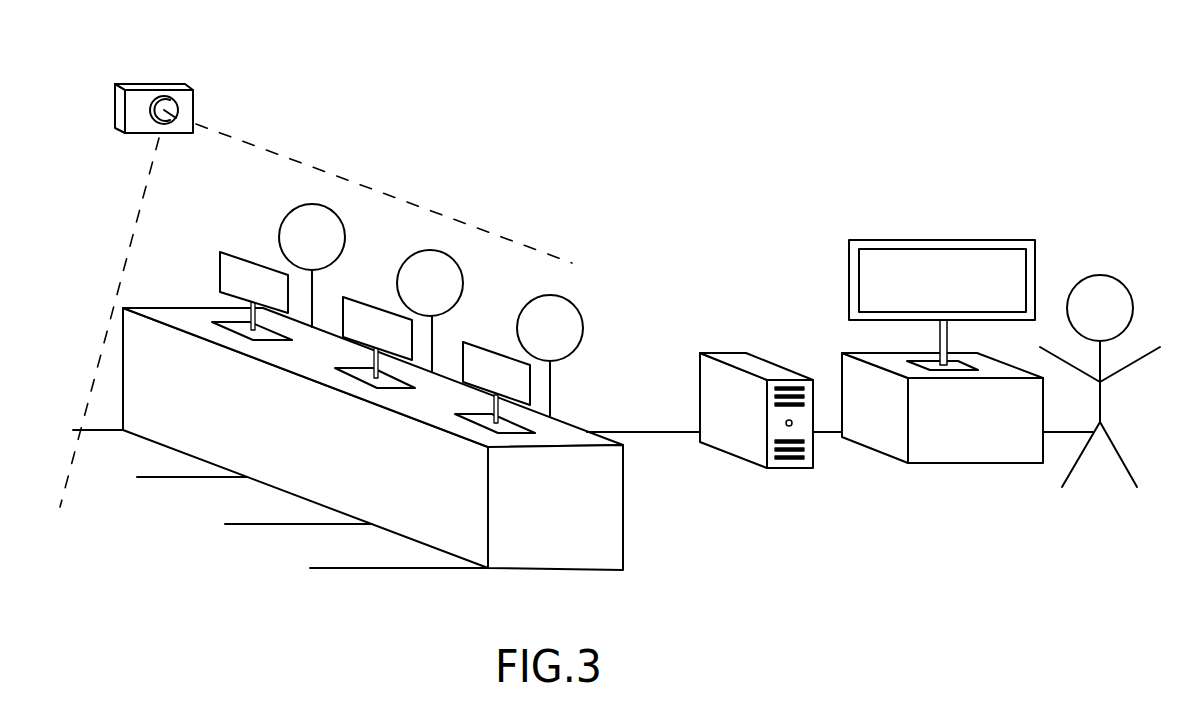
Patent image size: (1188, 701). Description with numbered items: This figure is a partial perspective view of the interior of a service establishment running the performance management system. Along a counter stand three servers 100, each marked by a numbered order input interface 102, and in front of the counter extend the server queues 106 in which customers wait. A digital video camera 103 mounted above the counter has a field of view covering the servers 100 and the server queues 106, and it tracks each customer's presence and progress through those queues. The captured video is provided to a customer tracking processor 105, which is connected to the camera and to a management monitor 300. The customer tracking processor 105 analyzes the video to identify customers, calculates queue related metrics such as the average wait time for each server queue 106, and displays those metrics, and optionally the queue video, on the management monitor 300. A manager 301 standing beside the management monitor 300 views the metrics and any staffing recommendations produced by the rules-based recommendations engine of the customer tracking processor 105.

The server 100 is at (325, 217).
The order input interface 102 is at (238, 265).
The digital video camera 103 is at (152, 87).
The customer tracking processor 105 is at (733, 360).
The server queue 106 is at (120, 453).
The management monitor 300 is at (1000, 253).
The manager 301 is at (1117, 287).